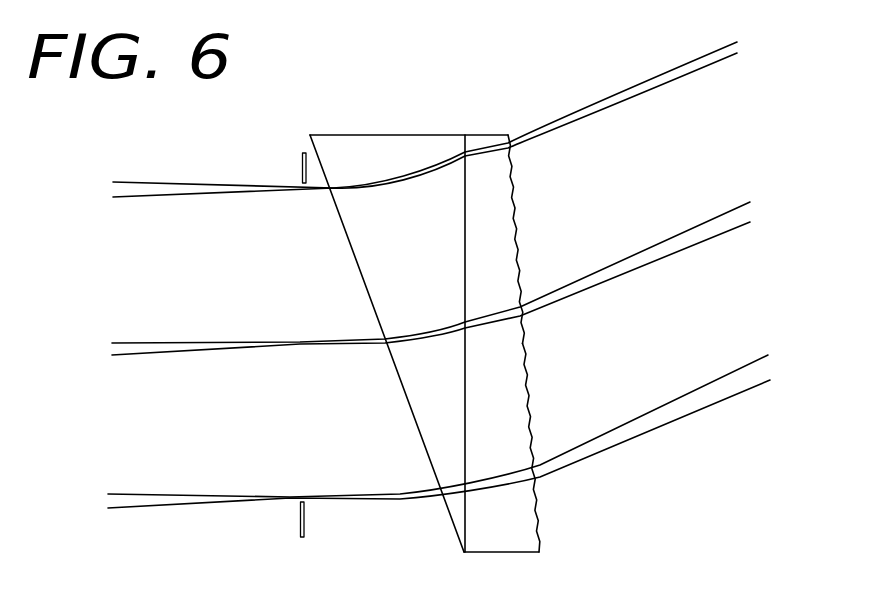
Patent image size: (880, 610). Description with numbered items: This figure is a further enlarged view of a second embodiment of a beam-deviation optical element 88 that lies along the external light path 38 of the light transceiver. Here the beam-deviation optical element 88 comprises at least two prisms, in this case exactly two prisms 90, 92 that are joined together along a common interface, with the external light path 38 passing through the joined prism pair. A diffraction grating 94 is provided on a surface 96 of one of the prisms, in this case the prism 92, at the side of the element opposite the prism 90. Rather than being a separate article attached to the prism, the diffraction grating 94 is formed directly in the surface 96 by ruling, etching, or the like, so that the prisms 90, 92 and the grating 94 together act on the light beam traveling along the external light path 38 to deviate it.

The external light path 38 is at (156, 355).
The beam-deviation optical element 88 is at (453, 288).
The prism 90 is at (368, 243).
The prism 92 is at (488, 189).
The diffraction grating 94 is at (522, 328).
The surface 96 is at (525, 355).